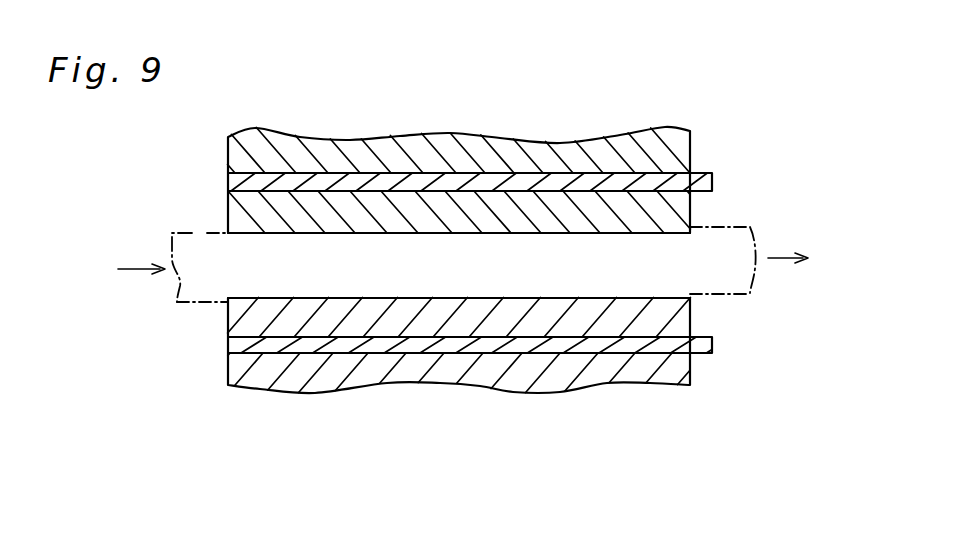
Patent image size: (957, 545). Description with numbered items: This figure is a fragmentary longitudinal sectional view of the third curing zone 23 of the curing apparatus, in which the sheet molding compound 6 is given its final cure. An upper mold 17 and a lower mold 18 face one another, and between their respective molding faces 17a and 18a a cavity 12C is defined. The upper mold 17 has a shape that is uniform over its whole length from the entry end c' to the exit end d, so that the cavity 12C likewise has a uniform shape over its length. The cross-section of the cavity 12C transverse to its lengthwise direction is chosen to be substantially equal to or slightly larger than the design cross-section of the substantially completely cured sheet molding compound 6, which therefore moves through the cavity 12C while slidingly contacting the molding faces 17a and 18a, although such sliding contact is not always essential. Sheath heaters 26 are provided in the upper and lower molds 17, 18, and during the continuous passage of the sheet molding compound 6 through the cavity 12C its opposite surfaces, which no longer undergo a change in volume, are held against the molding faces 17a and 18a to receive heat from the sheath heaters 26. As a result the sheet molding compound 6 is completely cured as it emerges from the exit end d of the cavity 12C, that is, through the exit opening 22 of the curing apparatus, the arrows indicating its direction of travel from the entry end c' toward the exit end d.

The heat exchanger module 23 is at (356, 118).
The upper mold 17 is at (613, 162).
The molding face 17a is at (487, 234).
The sheath heater 26 is at (712, 168).
The cavity 12C is at (392, 270).
The lower mold 18 is at (552, 357).
The molding face 18a is at (580, 298).
The exit opening 22 is at (692, 253).
The sheet molding compound 6 is at (202, 252).
The entry end c is at (228, 280).
The exit end d is at (690, 278).